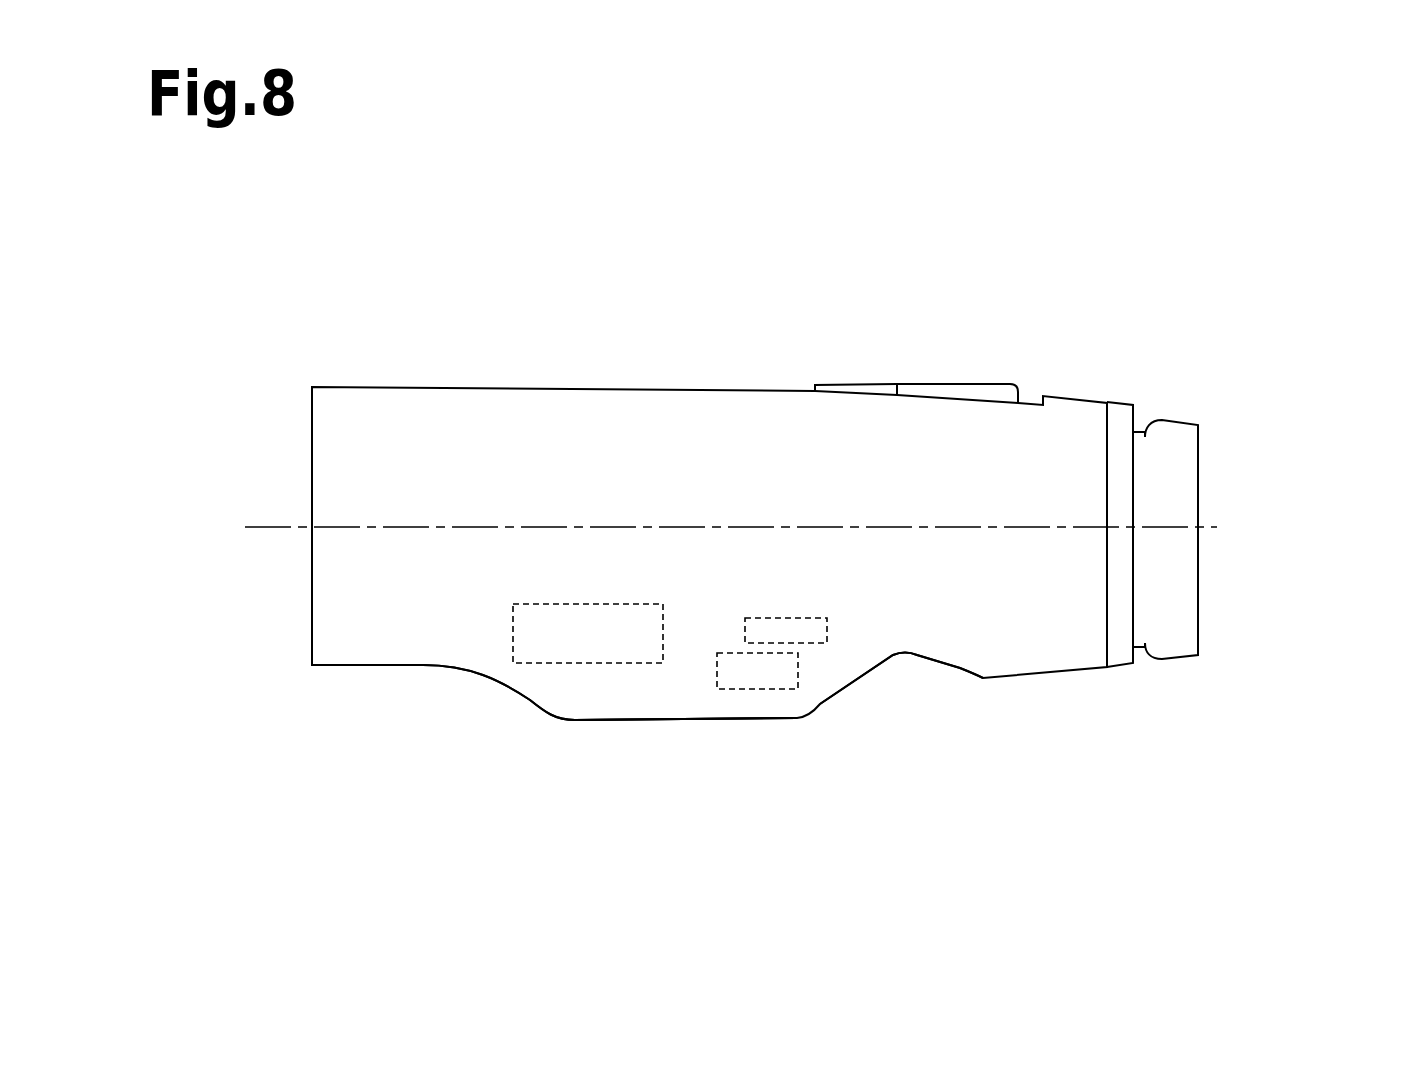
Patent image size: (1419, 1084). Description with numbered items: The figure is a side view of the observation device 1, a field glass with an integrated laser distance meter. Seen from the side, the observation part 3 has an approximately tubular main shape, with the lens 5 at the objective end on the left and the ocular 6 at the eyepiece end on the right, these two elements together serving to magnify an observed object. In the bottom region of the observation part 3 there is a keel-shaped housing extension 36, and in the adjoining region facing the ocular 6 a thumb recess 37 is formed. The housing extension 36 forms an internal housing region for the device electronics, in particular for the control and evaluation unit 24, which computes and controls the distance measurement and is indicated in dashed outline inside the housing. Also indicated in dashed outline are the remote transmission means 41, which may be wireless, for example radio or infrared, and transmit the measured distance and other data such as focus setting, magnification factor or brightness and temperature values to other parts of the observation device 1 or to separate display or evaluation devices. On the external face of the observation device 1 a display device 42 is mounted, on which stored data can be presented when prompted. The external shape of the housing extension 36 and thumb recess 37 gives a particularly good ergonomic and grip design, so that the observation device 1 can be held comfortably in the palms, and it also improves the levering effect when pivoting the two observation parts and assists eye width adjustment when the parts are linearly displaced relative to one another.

The observation device 1 is at (332, 308).
The observation part 3 is at (388, 725).
The lens 5 is at (290, 487).
The ocular 6 is at (1223, 593).
The control and evaluation unit 24 is at (600, 680).
The housing extension 36 is at (764, 742).
The thumb recess 37 is at (933, 672).
The remote transmission means 41 is at (818, 665).
The display device 42 is at (862, 393).